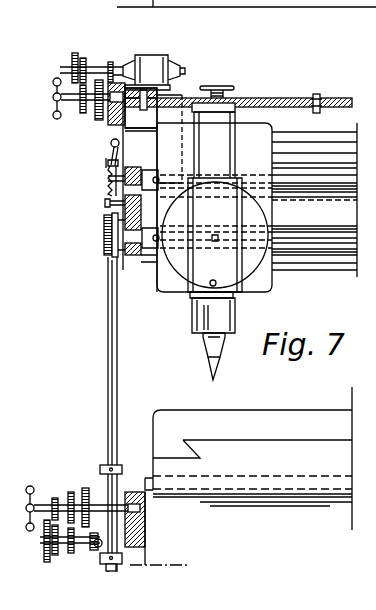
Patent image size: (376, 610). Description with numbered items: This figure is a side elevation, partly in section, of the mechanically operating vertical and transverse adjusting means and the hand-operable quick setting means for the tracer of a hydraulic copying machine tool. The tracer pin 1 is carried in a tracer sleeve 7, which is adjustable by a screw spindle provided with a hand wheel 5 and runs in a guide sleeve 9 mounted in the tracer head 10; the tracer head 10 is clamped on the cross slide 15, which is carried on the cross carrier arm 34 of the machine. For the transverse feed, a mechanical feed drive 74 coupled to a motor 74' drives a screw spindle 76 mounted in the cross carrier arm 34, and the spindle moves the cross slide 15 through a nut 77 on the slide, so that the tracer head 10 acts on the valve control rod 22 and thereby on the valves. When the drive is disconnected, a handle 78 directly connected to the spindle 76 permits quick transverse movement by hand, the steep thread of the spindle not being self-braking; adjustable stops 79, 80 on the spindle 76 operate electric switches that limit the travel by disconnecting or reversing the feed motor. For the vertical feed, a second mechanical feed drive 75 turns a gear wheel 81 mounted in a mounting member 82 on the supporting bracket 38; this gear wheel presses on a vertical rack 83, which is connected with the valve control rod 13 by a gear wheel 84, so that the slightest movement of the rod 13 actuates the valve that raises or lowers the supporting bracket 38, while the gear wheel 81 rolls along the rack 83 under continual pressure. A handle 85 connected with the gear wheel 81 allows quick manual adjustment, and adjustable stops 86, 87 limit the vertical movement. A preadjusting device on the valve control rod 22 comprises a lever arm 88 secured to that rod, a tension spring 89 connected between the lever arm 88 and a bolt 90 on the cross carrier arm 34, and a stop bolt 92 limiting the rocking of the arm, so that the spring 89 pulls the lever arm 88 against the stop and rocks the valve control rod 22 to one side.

The tracer pin 1 is at (211, 368).
The hand wheel 5 is at (219, 88).
The tracer sleeve 7 is at (205, 348).
The guide sleeve 9 is at (194, 318).
The tracer head 10 is at (190, 293).
The valve control rod 13 is at (322, 236).
The cross slide 15 is at (265, 282).
The valve control rod 22 is at (292, 194).
The cross carrier arm 34 is at (328, 262).
The supporting bracket 38 is at (150, 476).
The mechanical feed drive 74 is at (92, 83).
The motor 74' is at (149, 62).
The mechanical feed drive 75 is at (63, 498).
The screw spindle 76 is at (268, 93).
The nut 77 is at (212, 100).
The handle 78 is at (57, 120).
The adjustable stop 79 is at (318, 97).
The adjustable stop 80 is at (141, 108).
The gear wheel 81 is at (140, 508).
The mounting member 82 is at (143, 535).
The vertical rack 83 is at (108, 370).
The gear wheel 84 is at (104, 236).
The handle 85 is at (32, 486).
The adjustable stop 86 is at (117, 564).
The adjustable stop 87 is at (103, 465).
The lever arm 88 is at (110, 143).
The tension spring 89 is at (108, 170).
The bolt 90 is at (105, 203).
The stop bolt 92 is at (107, 180).